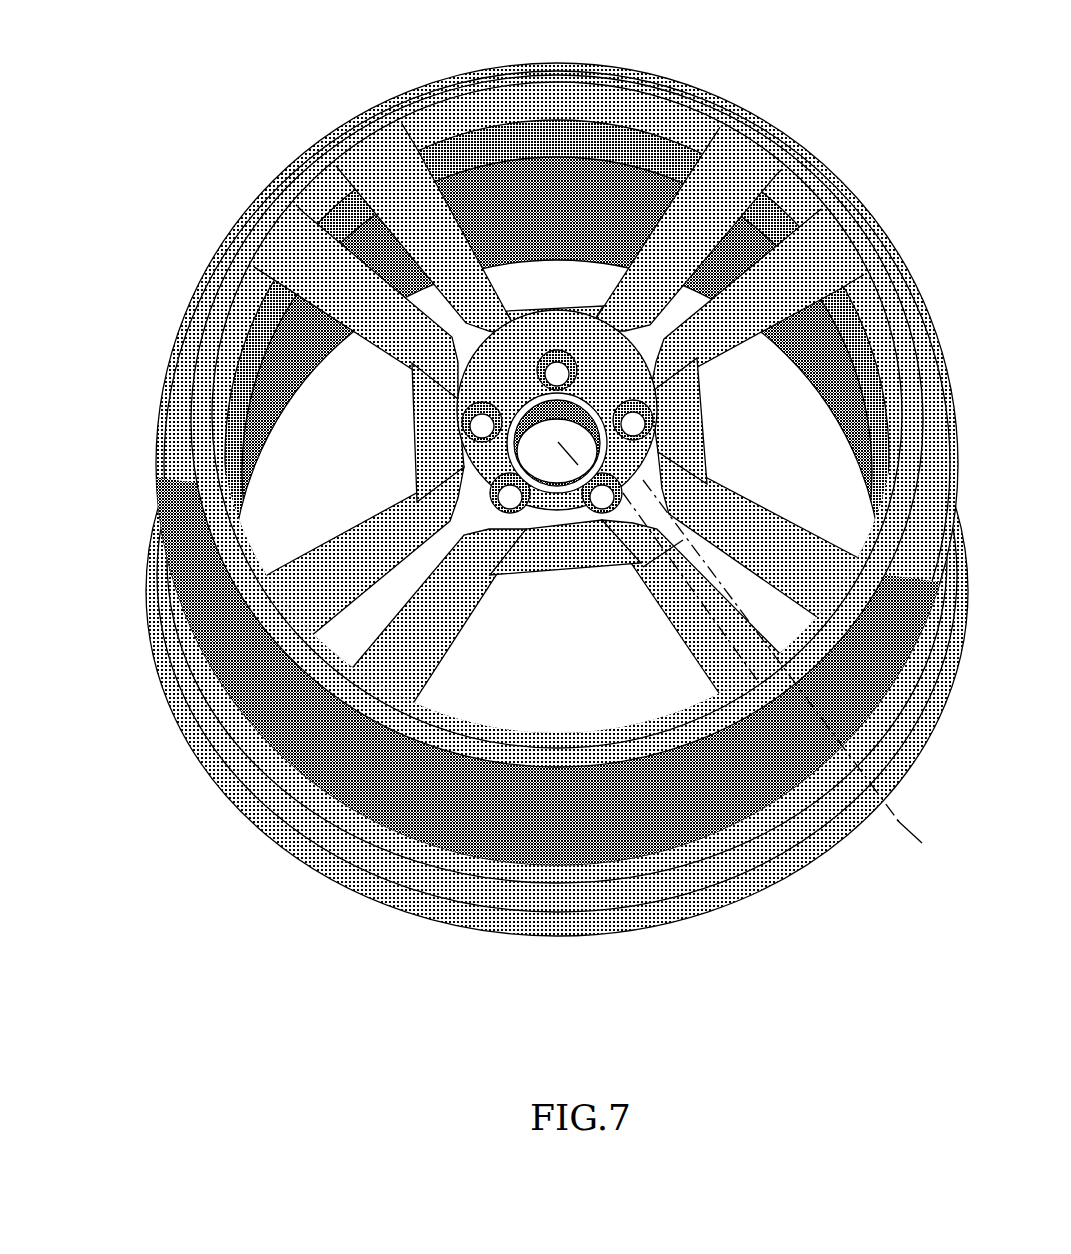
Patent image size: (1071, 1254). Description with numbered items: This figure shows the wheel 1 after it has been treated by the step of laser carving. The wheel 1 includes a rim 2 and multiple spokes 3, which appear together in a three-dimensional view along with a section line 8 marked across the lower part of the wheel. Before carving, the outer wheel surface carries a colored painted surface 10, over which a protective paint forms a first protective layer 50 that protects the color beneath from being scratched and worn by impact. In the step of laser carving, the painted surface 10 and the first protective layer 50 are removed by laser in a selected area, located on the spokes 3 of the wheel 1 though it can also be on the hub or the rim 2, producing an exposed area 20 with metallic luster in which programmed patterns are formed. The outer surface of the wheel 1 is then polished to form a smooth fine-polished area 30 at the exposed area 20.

The wheel 1 is at (514, 520).
The rim 2 is at (248, 697).
The spokes 3 is at (228, 600).
The section line 8- 8 is at (557, 457).
The painted surface 10 is at (544, 520).
The exposed area 20 is at (265, 260).
The fine-polished area 30 is at (245, 256).
The first protective layer 50 is at (544, 520).